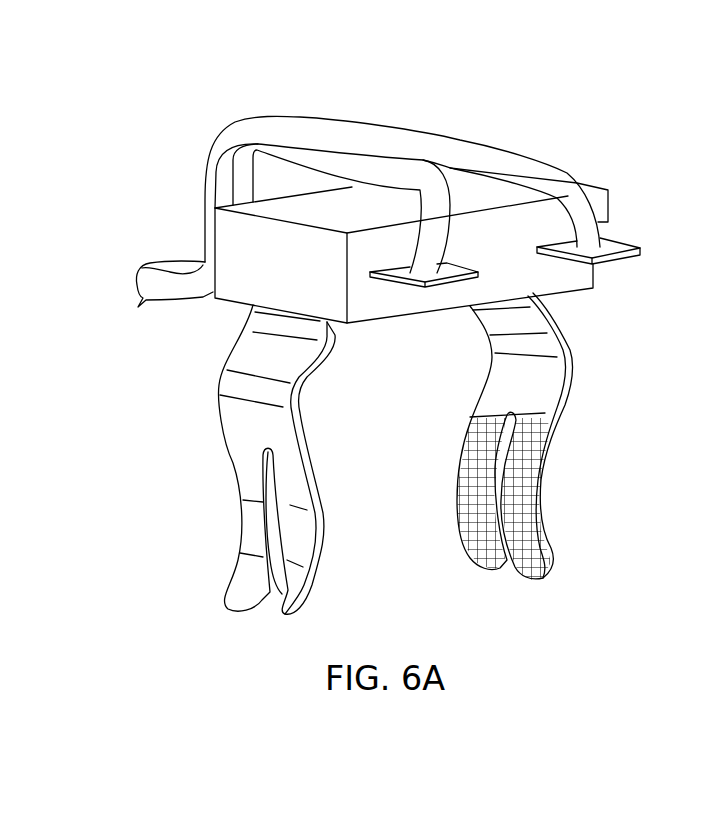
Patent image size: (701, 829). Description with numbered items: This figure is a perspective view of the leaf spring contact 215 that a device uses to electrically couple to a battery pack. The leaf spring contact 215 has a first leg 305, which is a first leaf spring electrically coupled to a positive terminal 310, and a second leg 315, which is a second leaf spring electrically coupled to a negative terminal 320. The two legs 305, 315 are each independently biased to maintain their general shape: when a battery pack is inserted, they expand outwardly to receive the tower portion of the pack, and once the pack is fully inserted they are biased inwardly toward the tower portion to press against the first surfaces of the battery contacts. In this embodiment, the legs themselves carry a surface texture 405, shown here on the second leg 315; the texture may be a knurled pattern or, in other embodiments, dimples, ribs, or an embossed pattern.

The leaf spring contact 215 is at (178, 115).
The first leg 305 is at (303, 551).
The positive terminal 310 is at (424, 283).
The second leg 315 is at (531, 436).
The negative terminal 320 is at (606, 243).
The surface texture 405 is at (524, 496).